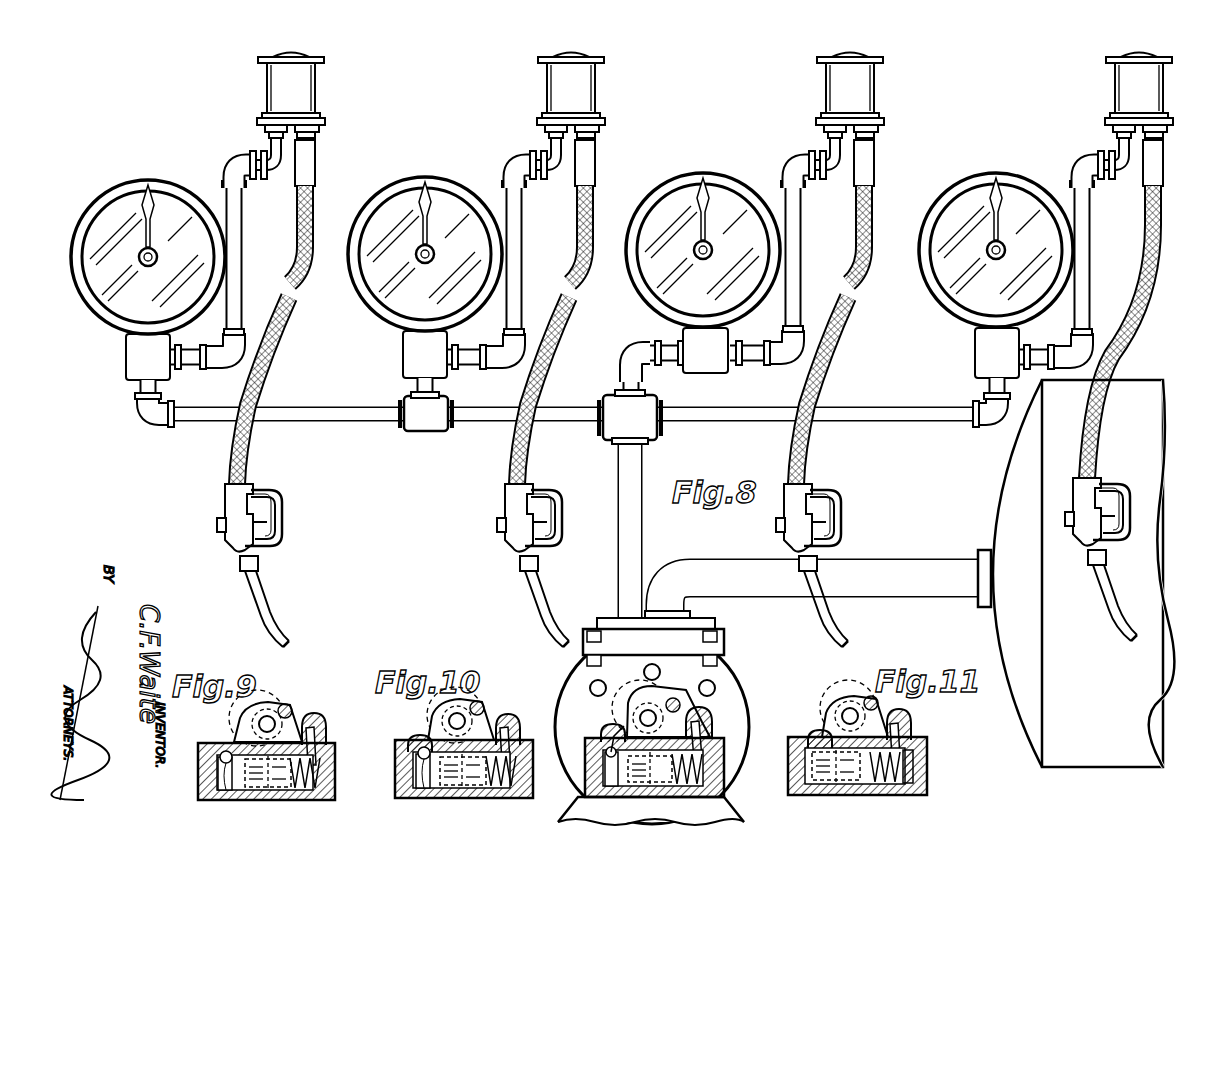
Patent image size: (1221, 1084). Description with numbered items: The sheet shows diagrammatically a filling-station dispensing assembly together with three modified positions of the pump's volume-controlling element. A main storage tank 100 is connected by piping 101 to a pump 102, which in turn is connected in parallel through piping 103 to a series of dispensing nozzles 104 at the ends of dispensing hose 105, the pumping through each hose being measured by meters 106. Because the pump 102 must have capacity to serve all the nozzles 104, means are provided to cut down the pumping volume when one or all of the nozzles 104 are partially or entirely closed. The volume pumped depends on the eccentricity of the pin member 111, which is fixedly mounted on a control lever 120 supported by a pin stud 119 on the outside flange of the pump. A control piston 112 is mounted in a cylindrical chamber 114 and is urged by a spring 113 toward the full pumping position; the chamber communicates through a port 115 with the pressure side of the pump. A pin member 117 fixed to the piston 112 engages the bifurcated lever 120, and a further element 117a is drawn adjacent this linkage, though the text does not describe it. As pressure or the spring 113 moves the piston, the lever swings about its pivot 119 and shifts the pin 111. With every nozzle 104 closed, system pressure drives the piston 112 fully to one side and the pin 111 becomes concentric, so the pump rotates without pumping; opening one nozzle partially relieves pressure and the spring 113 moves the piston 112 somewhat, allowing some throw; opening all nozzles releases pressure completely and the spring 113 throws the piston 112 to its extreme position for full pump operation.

In FIG. 8, the main storage tank 100 is at (1083, 573).
In FIG. 8, the piping 101 is at (916, 558).
In FIG. 8, the pump 102 is at (688, 672).
In FIG. 8, the piping 103 is at (622, 466).
In FIG. 8, the dispensing nozzle 104 is at (258, 598).
In FIG. 8, the dispensing hose 105 is at (266, 362).
In FIG. 8, the meter 106 is at (100, 294).
In FIG. 8, the pin member 111 is at (640, 716).
In FIG. 9, the pin member 111 is at (272, 712).
In FIG. 10, the pin member 111 is at (470, 710).
In FIG. 11, the pin member 111 is at (846, 708).
In FIG. 8, the control piston 112 is at (636, 798).
In FIG. 9, the control piston 112 is at (270, 793).
In FIG. 10, the control piston 112 is at (463, 791).
In FIG. 8, the spring 113 is at (684, 798).
In FIG. 9, the spring 113 is at (306, 796).
In FIG. 10, the spring 113 is at (490, 796).
In FIG. 11, the spring 113 is at (888, 790).
In FIG. 11, the cylindrical chamber 114 is at (914, 778).
In FIG. 8, the port 115 is at (606, 740).
In FIG. 9, the port 115 is at (228, 792).
In FIG. 10, the port 115 is at (424, 792).
In FIG. 11, the pin member 117 is at (848, 786).
In FIG. 8, the stop 117a is at (714, 728).
In FIG. 9, the stop 117a is at (326, 736).
In FIG. 10, the stop 117a is at (520, 760).
In FIG. 11, the stop 117a is at (912, 728).
In FIG. 8, the pin stud 119 is at (681, 706).
In FIG. 9, the pin stud 119 is at (293, 711).
In FIG. 10, the pin stud 119 is at (485, 709).
In FIG. 11, the pin stud 119 is at (879, 704).
In FIG. 8, the control lever 120 is at (700, 716).
In FIG. 9, the control lever 120 is at (242, 734).
In FIG. 11, the control lever 120 is at (858, 690).